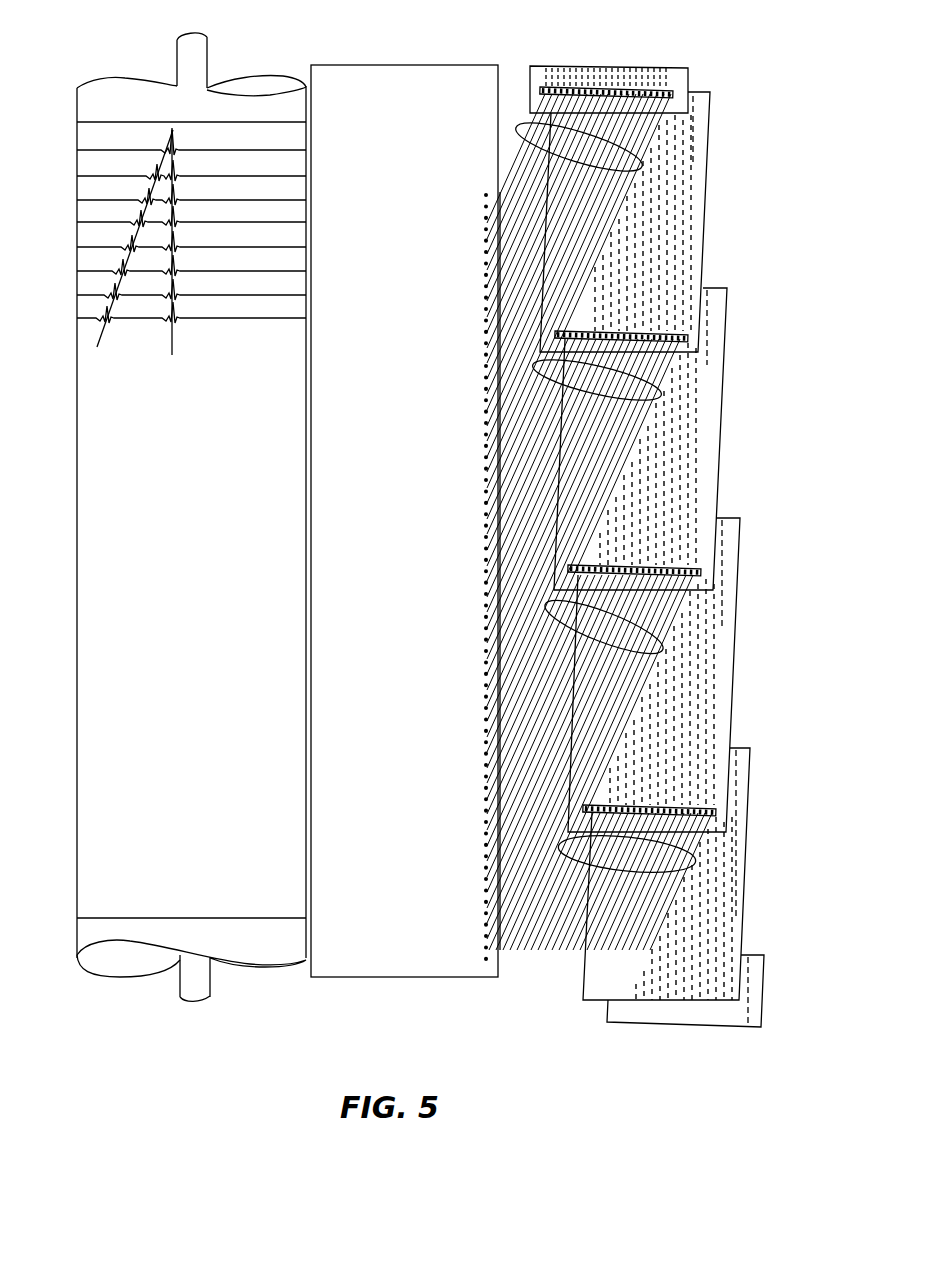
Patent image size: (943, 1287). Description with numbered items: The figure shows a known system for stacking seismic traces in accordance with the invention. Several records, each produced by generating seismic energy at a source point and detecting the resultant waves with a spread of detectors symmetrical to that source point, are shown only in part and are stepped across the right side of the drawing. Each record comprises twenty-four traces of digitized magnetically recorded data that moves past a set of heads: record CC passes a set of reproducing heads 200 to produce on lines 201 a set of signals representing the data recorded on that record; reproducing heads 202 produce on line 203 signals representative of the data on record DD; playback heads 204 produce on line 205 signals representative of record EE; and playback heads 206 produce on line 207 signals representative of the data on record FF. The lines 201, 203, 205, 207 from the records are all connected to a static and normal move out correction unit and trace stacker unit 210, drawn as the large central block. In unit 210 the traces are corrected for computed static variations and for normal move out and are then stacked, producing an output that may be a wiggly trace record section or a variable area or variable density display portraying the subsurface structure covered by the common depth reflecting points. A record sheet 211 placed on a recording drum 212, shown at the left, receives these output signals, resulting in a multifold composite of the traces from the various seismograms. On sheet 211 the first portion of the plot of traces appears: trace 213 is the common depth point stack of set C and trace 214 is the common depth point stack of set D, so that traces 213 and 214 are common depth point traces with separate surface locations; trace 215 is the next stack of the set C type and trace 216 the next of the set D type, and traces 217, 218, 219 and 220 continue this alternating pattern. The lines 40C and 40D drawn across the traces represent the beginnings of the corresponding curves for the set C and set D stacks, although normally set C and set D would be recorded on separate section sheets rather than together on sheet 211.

The reproducing heads 200 is at (716, 811).
The lines 201 is at (695, 860).
The reproducing heads 202 is at (701, 572).
The line 203 is at (664, 650).
The playback heads 204 is at (688, 337).
The line 205 is at (662, 393).
The playback heads 206 is at (674, 94).
The line 207 is at (644, 166).
The static and normal move out correction unit and trace stacker unit 210 is at (416, 401).
The record sheet 211 is at (92, 122).
The recording drum 212 is at (125, 77).
The trace 213 is at (92, 150).
The trace 214 is at (92, 176).
The trace 215 is at (92, 200).
The trace 216 is at (92, 222).
The trace 217 is at (92, 247).
The trace 218 is at (92, 271).
The trace 219 is at (92, 295).
The trace 220 is at (92, 318).
The line 40C is at (98, 345).
The line 40D is at (174, 347).